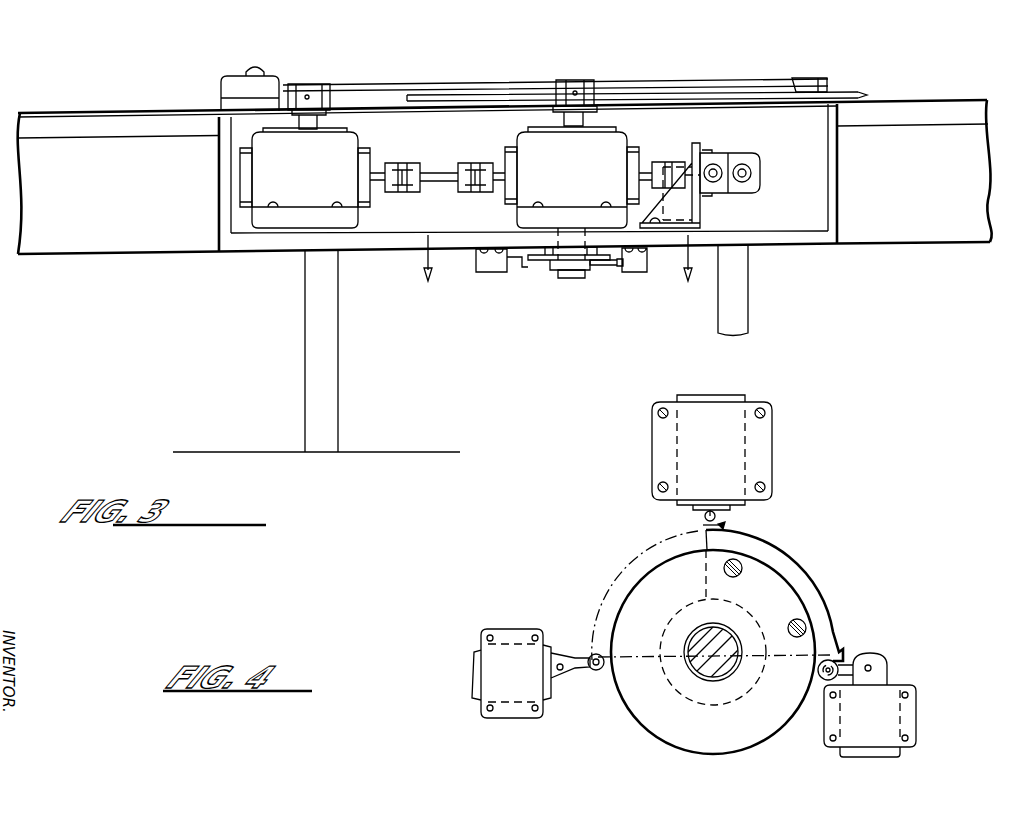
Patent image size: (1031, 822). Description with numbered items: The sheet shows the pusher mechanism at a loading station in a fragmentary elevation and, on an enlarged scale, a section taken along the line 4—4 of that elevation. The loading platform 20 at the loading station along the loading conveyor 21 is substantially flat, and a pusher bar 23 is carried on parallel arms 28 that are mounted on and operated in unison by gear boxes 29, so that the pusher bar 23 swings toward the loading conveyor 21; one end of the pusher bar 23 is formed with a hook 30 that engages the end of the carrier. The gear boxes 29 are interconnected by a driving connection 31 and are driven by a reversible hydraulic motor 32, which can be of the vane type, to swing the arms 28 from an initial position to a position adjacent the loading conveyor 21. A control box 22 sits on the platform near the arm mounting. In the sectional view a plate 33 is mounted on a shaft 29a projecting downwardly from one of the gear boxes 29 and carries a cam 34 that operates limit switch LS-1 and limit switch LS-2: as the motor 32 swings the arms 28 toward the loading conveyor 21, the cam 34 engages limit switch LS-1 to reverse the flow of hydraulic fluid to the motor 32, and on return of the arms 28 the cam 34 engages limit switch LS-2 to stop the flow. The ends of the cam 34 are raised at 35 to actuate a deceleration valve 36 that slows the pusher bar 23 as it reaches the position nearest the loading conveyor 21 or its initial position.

In FIG. 3, the loading platform 20 is at (370, 102).
In FIG. 3, the loading conveyor 21 is at (128, 92).
In FIG. 3, the control box 22 is at (257, 66).
In FIG. 3, the pusher bar 23 is at (826, 50).
In FIG. 3, the parallel arms 28 is at (470, 50).
In FIG. 3, the gear boxes 29 is at (272, 165).
In FIG. 3, the shaft 29a is at (570, 274).
In FIG. 4, the shaft 29a is at (702, 664).
In FIG. 3, the hook 30 is at (852, 93).
In FIG. 3, the driving connection 31 is at (432, 172).
In FIG. 3, the reversible hydraulic motor 32 is at (748, 158).
In FIG. 3, the plate 33 is at (543, 259).
In FIG. 4, the plate 33 is at (655, 582).
In FIG. 4, the cam 34 is at (782, 563).
In FIG. 4, the raised ends of cam 35 is at (722, 527).
In FIG. 3, the deceleration valve 36 is at (587, 273).
In FIG. 4, the deceleration valve 36 is at (733, 452).
In FIG. 3, the limit switch LS1 LS-1 is at (490, 269).
In FIG. 4, the limit switch LS1 LS-1 is at (492, 662).
In FIG. 3, the limit switch LS2 LS-2 is at (637, 264).
In FIG. 4, the limit switch LS2 LS-2 is at (886, 700).
In FIG. 3, the section line 4- 4 is at (436, 308).